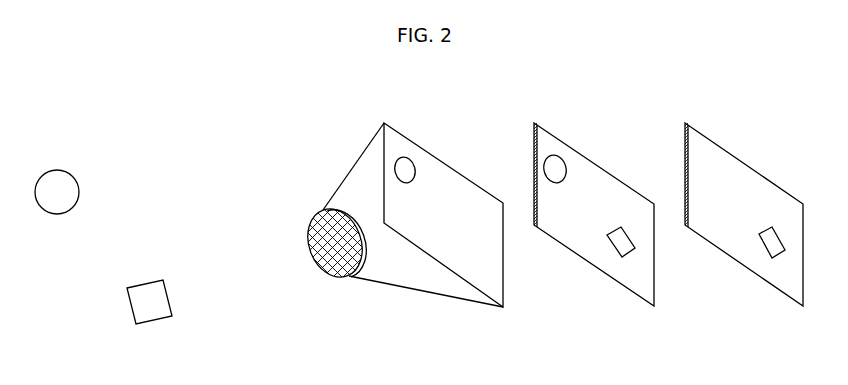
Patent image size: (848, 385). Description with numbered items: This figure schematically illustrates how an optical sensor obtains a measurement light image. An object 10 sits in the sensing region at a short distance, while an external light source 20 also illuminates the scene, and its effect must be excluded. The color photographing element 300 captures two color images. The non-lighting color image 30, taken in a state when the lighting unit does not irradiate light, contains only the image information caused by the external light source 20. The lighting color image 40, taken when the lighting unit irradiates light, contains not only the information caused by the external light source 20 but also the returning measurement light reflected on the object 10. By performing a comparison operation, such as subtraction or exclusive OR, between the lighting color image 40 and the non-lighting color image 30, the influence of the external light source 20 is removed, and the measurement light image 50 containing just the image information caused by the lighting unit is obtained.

The object 10 is at (131, 309).
The external light source 20 is at (63, 171).
The non-lighting color image 30 is at (503, 292).
The color photographing element 300 is at (332, 278).
The lighting color image 40 is at (642, 298).
The measurement light image 50 is at (783, 292).